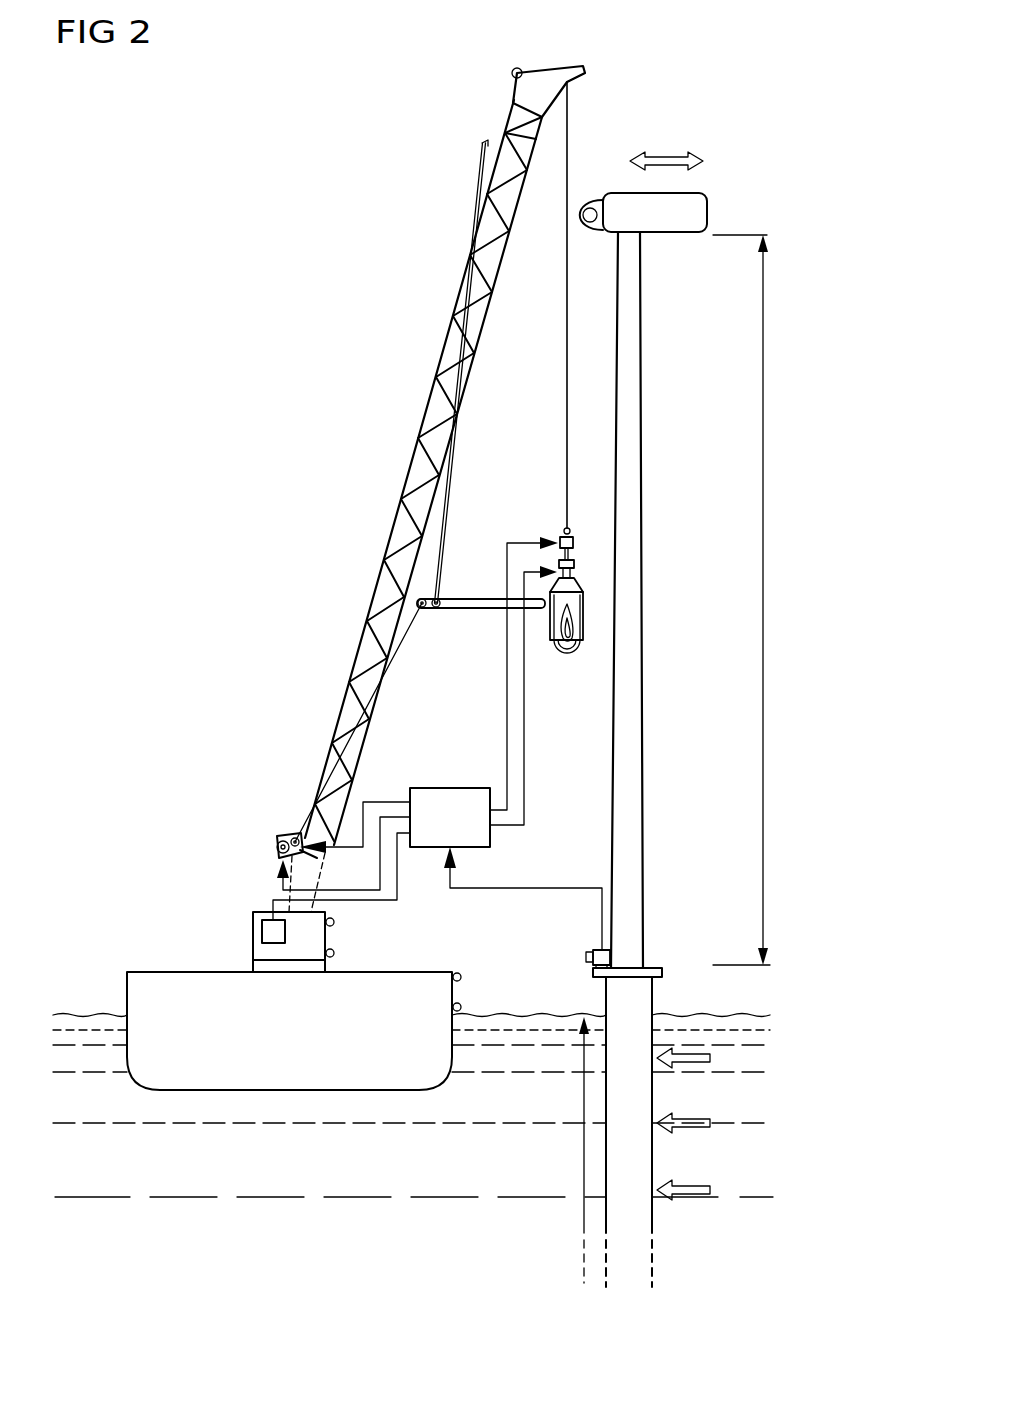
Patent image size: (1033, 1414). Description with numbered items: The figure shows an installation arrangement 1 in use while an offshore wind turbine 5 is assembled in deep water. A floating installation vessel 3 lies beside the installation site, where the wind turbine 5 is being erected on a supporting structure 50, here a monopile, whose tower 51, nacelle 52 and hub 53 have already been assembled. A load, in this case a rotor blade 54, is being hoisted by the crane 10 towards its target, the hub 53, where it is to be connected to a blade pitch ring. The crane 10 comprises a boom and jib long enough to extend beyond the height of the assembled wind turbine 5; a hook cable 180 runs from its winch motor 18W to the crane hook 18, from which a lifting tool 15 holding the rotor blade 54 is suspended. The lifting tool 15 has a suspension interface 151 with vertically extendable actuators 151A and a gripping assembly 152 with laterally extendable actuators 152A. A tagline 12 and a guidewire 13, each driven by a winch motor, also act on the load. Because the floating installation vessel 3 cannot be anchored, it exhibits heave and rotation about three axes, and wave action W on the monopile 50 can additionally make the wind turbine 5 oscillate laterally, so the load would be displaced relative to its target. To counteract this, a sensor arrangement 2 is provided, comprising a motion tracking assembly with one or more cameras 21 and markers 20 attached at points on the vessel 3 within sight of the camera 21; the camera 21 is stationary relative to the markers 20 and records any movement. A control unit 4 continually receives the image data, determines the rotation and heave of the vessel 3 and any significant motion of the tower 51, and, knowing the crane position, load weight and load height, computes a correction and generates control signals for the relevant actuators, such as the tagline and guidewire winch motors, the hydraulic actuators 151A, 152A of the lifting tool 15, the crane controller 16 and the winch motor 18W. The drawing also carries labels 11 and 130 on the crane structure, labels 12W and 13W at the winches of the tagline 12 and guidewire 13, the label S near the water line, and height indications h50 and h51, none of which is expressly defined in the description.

The installation arrangement 1 is at (226, 433).
The sensor arrangement 2 is at (538, 950).
The floating installation vessel 3 is at (145, 970).
The control unit 4 is at (458, 743).
The offshore wind turbine 5 is at (671, 687).
The crane 10 is at (393, 527).
The boom tip 11 is at (571, 67).
The tagline 12 is at (473, 382).
The guidewire 13 is at (452, 348).
The lifting tool 15 is at (598, 579).
The crane controller 16 is at (262, 932).
The crane hook 18 is at (563, 528).
The markers 20 is at (335, 924).
The camera 21 is at (613, 957).
The supporting structure 50 is at (637, 1158).
The tower 51 is at (645, 750).
The nacelle 52 is at (700, 213).
The hub 53 is at (598, 200).
The rotor blade 54 is at (567, 653).
The boom arm with sheaves 130 is at (433, 597).
The suspension interface 151 is at (558, 541).
The vertically extendable actuators 151A is at (573, 543).
The gripping assembly 152 is at (575, 562).
The laterally extendable actuators 152A is at (577, 572).
The hoist winch 12W is at (290, 838).
The luffing winch 13W is at (277, 849).
The winch motor of the hook cable 18W is at (512, 73).
The hook cable 180 is at (667, 150).
The sea surface S is at (85, 1015).
The wave action W is at (690, 1123).
The foundation height h50 is at (583, 1168).
The tower height h51 is at (780, 600).